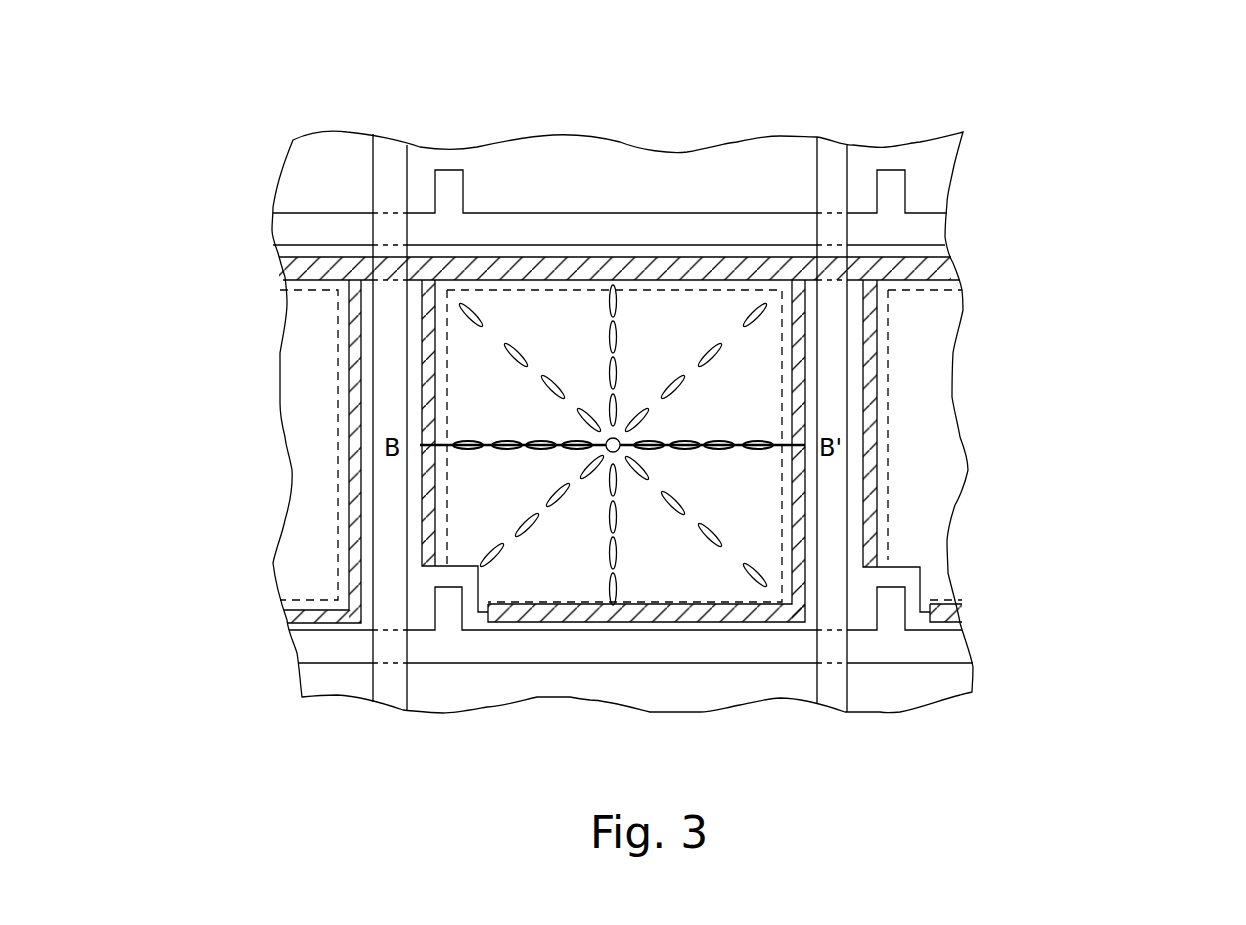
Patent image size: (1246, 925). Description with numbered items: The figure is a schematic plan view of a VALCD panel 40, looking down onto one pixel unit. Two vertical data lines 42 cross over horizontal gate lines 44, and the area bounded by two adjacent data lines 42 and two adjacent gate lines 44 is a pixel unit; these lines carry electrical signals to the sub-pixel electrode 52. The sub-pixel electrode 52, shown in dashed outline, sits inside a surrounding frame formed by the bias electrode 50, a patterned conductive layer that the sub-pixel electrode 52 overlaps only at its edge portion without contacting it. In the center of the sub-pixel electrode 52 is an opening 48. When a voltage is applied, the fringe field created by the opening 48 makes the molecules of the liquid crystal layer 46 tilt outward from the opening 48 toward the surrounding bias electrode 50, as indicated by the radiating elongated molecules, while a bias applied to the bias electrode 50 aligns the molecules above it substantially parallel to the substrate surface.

The VALCD panel 40 is at (1105, 125).
The data line 42 is at (833, 684).
The gate line 44 is at (932, 647).
The liquid crystal layer 46 is at (708, 537).
The opening 48 is at (625, 437).
The bias electrode 50 is at (668, 265).
The sub-pixel electrode 52 is at (500, 399).